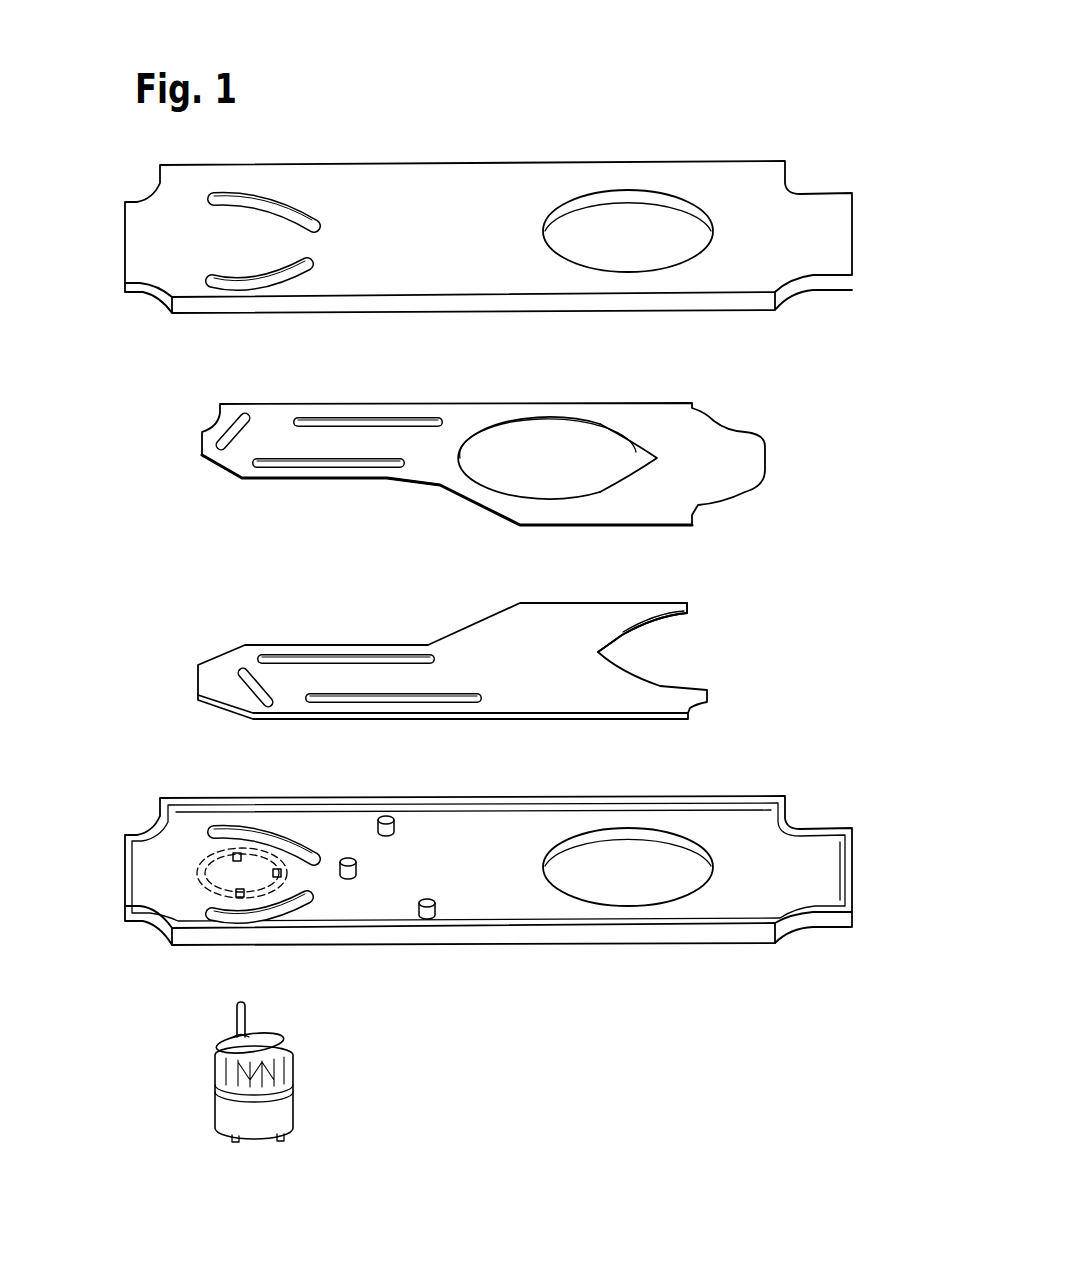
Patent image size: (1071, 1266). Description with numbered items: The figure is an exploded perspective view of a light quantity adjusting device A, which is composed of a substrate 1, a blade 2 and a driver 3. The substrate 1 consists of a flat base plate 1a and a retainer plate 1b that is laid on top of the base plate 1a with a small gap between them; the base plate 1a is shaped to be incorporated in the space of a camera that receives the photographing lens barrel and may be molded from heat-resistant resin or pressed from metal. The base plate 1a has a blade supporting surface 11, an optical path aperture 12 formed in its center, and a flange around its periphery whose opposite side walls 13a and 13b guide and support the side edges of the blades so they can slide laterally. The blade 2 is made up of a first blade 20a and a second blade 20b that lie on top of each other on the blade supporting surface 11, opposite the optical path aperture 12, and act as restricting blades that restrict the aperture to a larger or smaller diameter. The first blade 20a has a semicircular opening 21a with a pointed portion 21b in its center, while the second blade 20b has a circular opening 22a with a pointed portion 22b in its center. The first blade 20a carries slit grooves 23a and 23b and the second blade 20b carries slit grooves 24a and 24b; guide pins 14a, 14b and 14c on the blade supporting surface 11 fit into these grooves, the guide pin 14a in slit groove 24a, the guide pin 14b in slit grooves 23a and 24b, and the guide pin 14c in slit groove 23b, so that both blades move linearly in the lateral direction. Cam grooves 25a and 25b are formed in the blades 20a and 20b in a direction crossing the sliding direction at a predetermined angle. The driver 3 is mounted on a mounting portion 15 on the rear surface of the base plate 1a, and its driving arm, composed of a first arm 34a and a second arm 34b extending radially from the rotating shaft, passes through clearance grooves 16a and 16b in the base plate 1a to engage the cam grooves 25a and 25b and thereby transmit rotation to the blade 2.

The light quantity adjusting device A is at (701, 105).
The substrate 1 is at (90, 729).
The base plate 1a is at (180, 835).
The retainer plate 1b is at (157, 270).
The blade 2 is at (166, 617).
The driver 3 is at (312, 1073).
The blade supporting surface 11 is at (480, 852).
The optical path aperture 12 is at (623, 903).
The side wall 13a is at (610, 808).
The side wall 13b is at (580, 922).
The guide pin 14a is at (386, 815).
The guide pin 14b is at (350, 856).
The guide pin 14c is at (435, 907).
The mounting portion 15 is at (200, 860).
The clearance groove 16a is at (250, 818).
The clearance groove 16b is at (280, 903).
The first blade 20a is at (218, 672).
The second blade 20b is at (210, 465).
The semicircular opening 21a is at (670, 620).
The pointed portion 21b is at (632, 660).
The circular opening 22a is at (528, 420).
The pointed portion 22b is at (645, 452).
The slit groove 23a is at (326, 658).
The slit groove 23b is at (374, 700).
The slit groove 24a is at (348, 418).
The slit groove 24b is at (326, 468).
The cam groove 25a is at (245, 673).
The cam groove 25b is at (226, 435).
The first arm 34a is at (237, 1020).
The second arm 34b is at (292, 1087).